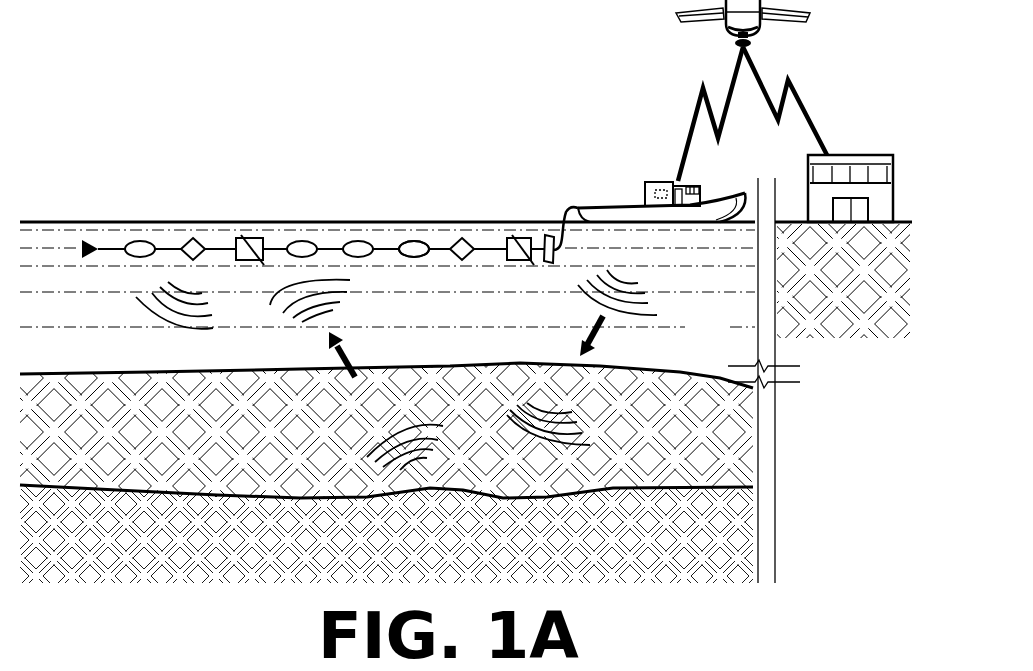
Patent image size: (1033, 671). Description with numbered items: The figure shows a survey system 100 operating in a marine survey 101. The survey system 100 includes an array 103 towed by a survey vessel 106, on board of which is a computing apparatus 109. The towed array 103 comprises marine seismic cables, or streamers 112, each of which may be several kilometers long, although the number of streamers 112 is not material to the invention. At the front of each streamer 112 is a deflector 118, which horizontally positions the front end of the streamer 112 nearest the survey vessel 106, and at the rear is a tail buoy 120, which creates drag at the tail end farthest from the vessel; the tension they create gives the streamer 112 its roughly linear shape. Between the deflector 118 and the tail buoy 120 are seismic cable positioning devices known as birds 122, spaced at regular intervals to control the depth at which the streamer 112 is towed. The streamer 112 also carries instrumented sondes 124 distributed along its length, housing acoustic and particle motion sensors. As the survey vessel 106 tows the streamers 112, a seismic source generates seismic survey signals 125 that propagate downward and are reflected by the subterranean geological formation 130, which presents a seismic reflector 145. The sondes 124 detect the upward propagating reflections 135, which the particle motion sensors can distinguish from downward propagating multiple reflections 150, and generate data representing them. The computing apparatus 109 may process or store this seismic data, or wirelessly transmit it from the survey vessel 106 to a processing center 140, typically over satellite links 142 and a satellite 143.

The survey system 100 is at (403, 119).
The marine survey 101 is at (108, 22).
The array 103 is at (118, 146).
The survey vessel 106 is at (728, 204).
The computing apparatus 109 is at (652, 184).
The streamer 112 is at (574, 206).
The deflector 118 is at (558, 250).
The tail buoy 120 is at (88, 238).
The bird 122 is at (518, 237).
The instrumented sonde 124 is at (413, 240).
The seismic survey signal 125 is at (568, 313).
The geological formation 130 is at (335, 450).
The reflection 135 is at (369, 299).
The processing center 140 is at (868, 154).
The satellite link 142 is at (692, 128).
The satellite 143 is at (676, 18).
The seismic reflector 145 is at (616, 488).
The multiple reflection 150 is at (133, 321).